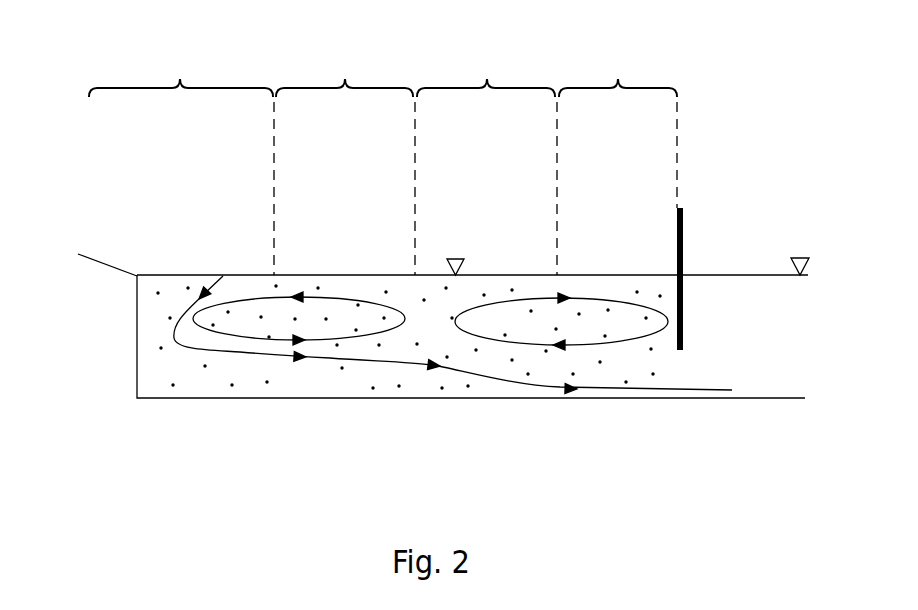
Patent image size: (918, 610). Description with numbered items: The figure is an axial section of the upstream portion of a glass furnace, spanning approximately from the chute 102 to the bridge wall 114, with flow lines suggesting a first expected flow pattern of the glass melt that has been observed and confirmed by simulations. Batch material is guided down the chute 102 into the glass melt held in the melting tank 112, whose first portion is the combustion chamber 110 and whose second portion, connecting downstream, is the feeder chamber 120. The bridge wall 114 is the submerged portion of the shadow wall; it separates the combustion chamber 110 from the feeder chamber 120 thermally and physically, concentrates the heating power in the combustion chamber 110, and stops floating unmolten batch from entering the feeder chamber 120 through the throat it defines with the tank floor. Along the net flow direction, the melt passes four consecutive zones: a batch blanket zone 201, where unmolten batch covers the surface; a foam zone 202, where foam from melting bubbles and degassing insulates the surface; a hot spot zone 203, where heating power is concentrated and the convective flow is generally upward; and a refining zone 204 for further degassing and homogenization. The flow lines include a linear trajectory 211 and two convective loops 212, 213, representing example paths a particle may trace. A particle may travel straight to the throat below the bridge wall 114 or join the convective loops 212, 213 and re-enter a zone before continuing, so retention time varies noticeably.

The batch blanket zone 201 is at (181, 160).
The foam zone 202 is at (345, 160).
The hot spot zone 203 is at (487, 160).
The refining zone 204 is at (618, 126).
The chute 102 is at (97, 261).
The combustion chamber 110 is at (590, 266).
The melting tank 112 is at (302, 392).
The bridge wall 114 is at (677, 230).
The feeder chamber 120 is at (712, 266).
The linear trajectory 211 is at (217, 348).
The first convective loop 212 is at (263, 338).
The second convective loop 213 is at (617, 348).